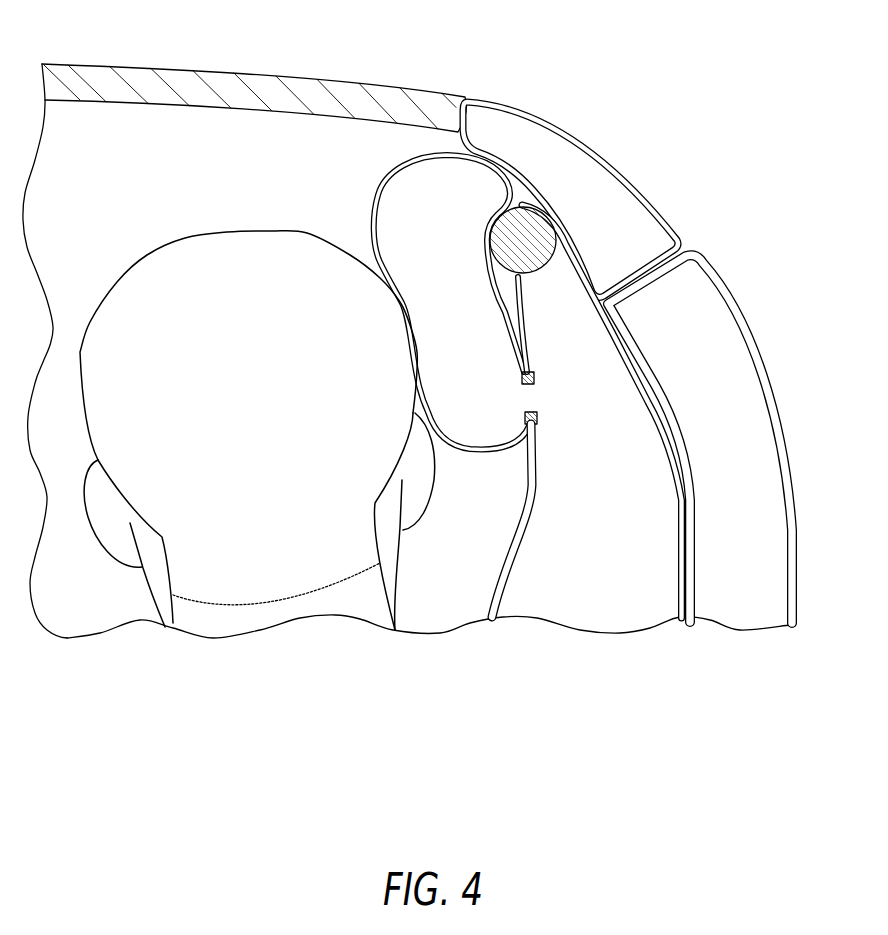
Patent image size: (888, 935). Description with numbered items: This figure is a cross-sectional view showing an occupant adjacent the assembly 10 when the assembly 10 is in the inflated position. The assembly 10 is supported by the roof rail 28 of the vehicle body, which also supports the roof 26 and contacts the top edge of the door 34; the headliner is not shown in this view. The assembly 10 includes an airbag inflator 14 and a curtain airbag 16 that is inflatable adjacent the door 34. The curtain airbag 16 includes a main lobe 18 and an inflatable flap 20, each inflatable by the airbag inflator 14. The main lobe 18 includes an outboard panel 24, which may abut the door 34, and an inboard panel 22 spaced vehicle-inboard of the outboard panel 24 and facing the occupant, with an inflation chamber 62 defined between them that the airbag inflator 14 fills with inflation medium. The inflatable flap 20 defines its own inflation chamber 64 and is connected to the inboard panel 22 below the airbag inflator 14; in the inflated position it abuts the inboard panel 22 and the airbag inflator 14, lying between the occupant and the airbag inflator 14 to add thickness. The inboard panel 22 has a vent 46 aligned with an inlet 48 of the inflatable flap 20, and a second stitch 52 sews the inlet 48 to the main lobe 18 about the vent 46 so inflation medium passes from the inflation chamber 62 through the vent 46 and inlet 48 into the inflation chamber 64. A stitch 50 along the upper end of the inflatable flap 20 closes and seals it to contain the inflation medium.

The assembly 10 is at (463, 588).
The airbag inflator 14 is at (530, 223).
The curtain airbag 16 is at (517, 489).
The main lobe 18 is at (693, 556).
The inflatable flap 20 is at (372, 215).
The inboard panel 22 is at (507, 541).
The outboard panel 24 is at (686, 491).
The roof 26 is at (421, 91).
The roof rail 28 is at (617, 222).
The door 34 is at (700, 360).
The vent 46 is at (540, 416).
The inlet 48 is at (527, 413).
The stitch 50 is at (430, 160).
The second stitch 52 is at (536, 377).
The inflation chamber 62 is at (608, 612).
The inflation chamber 64 is at (405, 200).